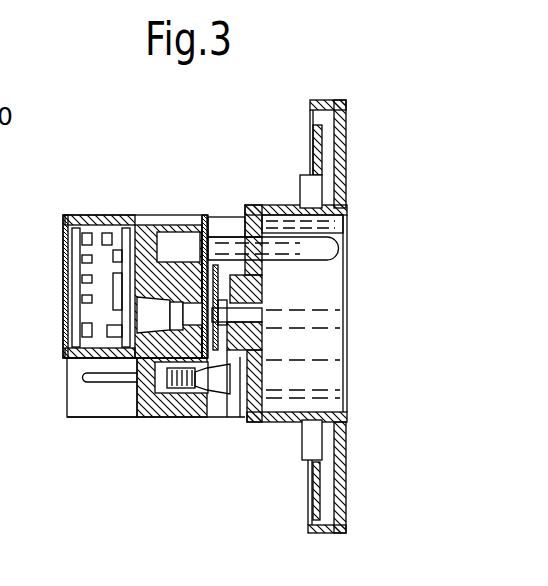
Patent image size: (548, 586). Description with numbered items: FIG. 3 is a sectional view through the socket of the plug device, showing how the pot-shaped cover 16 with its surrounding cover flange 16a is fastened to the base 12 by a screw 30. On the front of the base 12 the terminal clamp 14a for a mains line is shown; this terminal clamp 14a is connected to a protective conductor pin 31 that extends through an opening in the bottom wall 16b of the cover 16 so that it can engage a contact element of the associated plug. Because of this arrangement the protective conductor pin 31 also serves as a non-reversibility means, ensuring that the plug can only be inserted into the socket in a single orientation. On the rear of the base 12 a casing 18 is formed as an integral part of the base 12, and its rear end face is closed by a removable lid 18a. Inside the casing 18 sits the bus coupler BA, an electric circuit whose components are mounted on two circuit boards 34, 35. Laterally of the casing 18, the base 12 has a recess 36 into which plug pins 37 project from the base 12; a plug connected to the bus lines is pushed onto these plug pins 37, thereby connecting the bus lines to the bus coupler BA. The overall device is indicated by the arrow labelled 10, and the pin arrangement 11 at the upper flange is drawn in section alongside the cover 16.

The sensor device 10 is at (171, 197).
The connector pin 11 is at (310, 175).
The base 12 is at (188, 216).
The terminal clamp 14a is at (215, 395).
The pot-shaped cover 16 is at (297, 420).
The cover flange 16a is at (343, 480).
The bottom wall 16b is at (262, 370).
The casing 18 is at (77, 212).
The removable lid 18a is at (62, 287).
The screw 30 is at (262, 293).
The protective conductor pin 31 is at (325, 247).
The circuit board 34 is at (126, 226).
The circuit board 35 is at (62, 350).
The recess 36 is at (85, 410).
The plug pins 37 is at (107, 383).
The bus coupler BA is at (100, 257).